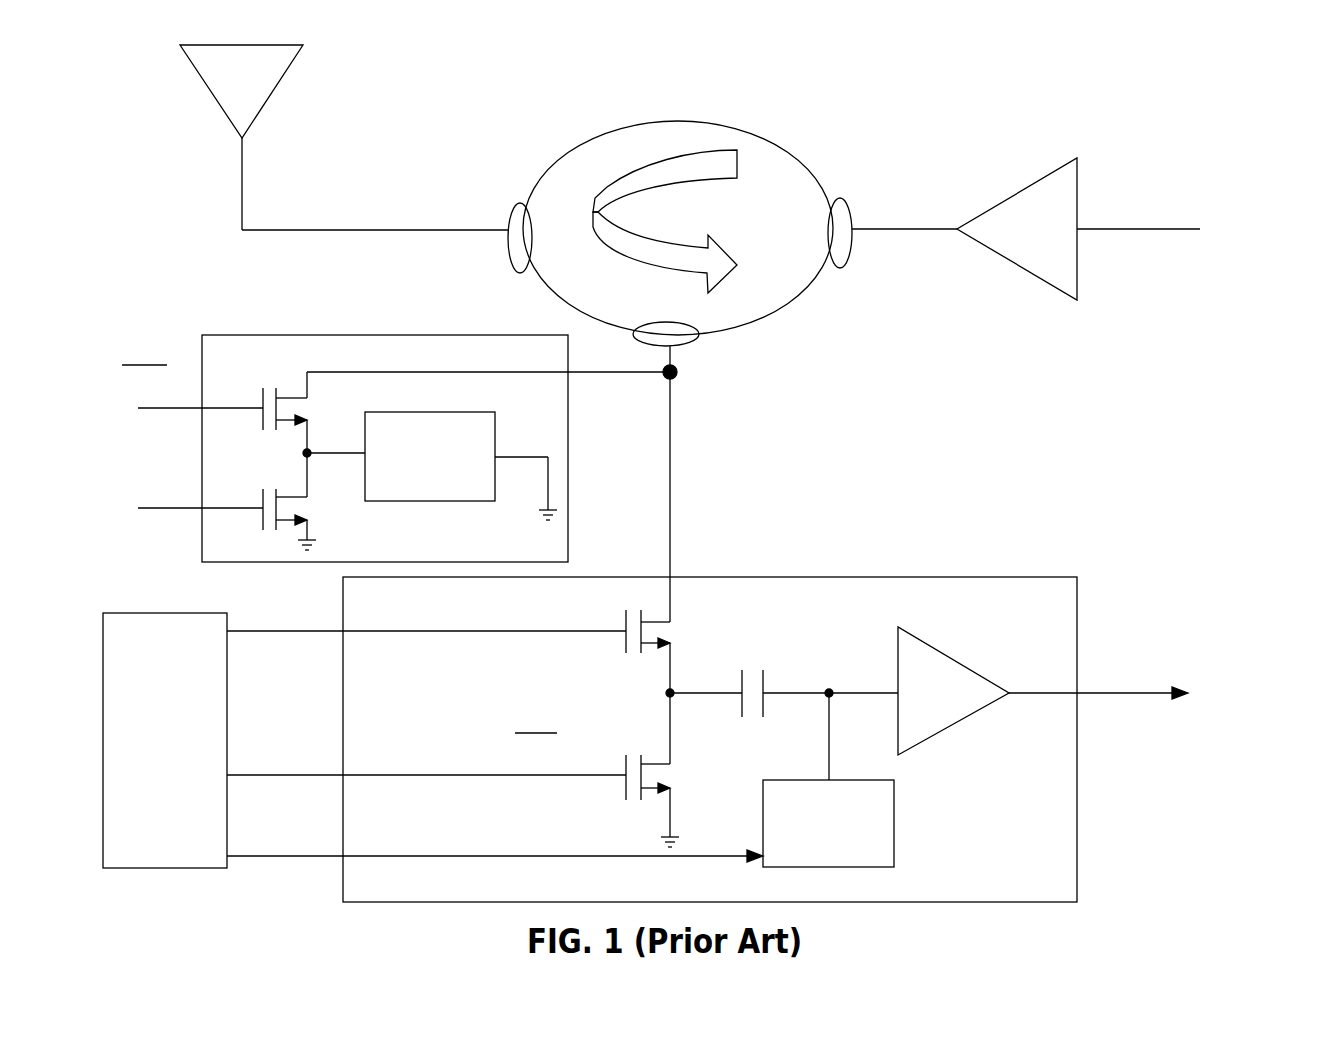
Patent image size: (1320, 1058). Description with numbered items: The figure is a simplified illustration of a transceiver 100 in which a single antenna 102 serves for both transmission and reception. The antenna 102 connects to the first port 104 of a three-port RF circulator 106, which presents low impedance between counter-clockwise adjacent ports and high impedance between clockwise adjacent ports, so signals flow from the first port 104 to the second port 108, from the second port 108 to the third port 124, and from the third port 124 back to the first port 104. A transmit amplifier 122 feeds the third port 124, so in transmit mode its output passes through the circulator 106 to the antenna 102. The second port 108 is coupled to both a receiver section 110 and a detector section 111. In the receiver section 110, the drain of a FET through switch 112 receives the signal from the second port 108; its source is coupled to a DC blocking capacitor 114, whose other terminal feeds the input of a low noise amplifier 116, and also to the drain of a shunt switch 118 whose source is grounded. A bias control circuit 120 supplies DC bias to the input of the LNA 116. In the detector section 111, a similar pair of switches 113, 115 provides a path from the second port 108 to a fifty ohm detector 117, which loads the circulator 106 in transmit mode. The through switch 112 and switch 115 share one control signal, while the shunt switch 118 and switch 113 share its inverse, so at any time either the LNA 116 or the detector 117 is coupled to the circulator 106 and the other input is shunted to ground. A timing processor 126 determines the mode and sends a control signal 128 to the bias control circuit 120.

The transceiver 100 is at (982, 114).
The antenna 102 is at (260, 98).
The first port 104 is at (515, 203).
The three-port Radio Frequency (RF) circulator 106 is at (700, 132).
The second port 108 is at (695, 342).
The receiver section 110 is at (821, 605).
The detector section 111 is at (305, 335).
The through switch 112 is at (620, 645).
The switch 113 is at (270, 386).
The direct current (DC) blocking capacitor 114 is at (729, 708).
The switch 115 is at (273, 486).
The low noise amplifier (LNA) 116 is at (937, 667).
The 50 ohm detector 117 is at (493, 427).
The shunt switch 118 is at (634, 754).
The bias control circuit 120 is at (882, 787).
The transmit amplifier 122 is at (1088, 190).
The third port 124 is at (853, 212).
The timing processor 126 is at (364, 740).
The control signal 128 is at (433, 857).